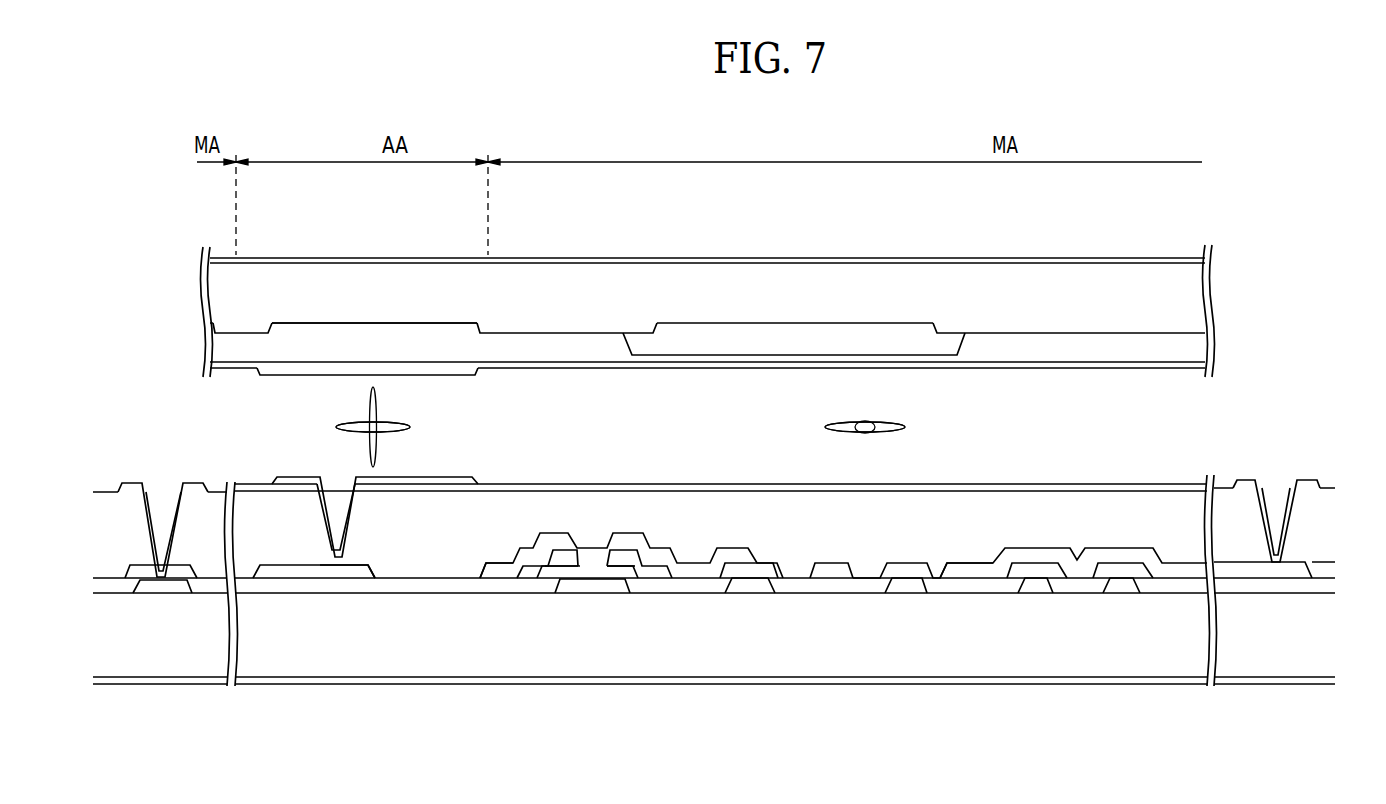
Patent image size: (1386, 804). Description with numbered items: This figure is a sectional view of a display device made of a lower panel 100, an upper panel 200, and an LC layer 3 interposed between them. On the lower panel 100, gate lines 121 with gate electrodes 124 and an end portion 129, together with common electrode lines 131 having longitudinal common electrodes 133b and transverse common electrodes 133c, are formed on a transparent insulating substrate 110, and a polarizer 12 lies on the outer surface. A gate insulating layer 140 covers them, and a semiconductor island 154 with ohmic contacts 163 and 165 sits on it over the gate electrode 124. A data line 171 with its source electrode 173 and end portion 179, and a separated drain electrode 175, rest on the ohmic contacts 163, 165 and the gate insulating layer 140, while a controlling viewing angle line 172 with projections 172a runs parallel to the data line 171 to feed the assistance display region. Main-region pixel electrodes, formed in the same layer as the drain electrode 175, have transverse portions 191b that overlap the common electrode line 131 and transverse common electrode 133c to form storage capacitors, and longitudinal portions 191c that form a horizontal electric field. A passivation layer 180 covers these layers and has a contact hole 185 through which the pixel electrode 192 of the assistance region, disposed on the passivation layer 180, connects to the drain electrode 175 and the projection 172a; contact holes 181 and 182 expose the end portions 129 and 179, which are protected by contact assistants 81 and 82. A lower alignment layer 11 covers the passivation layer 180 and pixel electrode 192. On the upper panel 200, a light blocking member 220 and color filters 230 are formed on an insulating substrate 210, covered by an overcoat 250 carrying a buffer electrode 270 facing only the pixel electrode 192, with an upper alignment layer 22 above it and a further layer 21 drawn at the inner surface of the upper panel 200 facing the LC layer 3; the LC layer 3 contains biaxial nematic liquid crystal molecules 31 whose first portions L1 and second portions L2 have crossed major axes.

The upper panel 200 is at (1342, 257).
The upper alignment layer 22 is at (458, 257).
The insulating substrate 210 is at (578, 282).
The overcoat 250 is at (330, 335).
The light blocking member 220 is at (248, 327).
The color filters 230 is at (683, 333).
The upper alignment layer 21 is at (855, 362).
The buffer electrode 270 is at (372, 362).
The LC layer 3 is at (1342, 372).
The biaxial nematic liquid crystal molecules 31 is at (425, 430).
The first portions L1 is at (377, 405).
The second portions L2 is at (400, 432).
The lower panel 100 is at (1342, 678).
The insulating substrate 110 is at (427, 653).
The polarizer 12 is at (264, 680).
The gate insulating layer 140 is at (458, 588).
The lower alignment layer 11 is at (247, 480).
The contact assistant 81 is at (130, 483).
The contact hole 181 is at (150, 510).
The end portion 129 is at (162, 590).
The pixel electrode 192 is at (298, 487).
The contact hole 185 is at (353, 520).
The controlling viewing angle line 172 is at (278, 588).
The projection 172a is at (360, 582).
The passivation layer 180 is at (867, 550).
The data line 171 is at (487, 570).
The gate electrode 124 is at (600, 590).
The semiconductor island 154 is at (572, 566).
The ohmic contact 163 is at (545, 570).
The ohmic contact 165 is at (657, 566).
The source electrode 173 is at (517, 580).
The drain electrode 175 is at (674, 570).
The transverse portion 191b is at (706, 563).
The transverse common electrode 133c is at (750, 587).
The longitudinal portion 191c is at (828, 570).
The longitudinal common electrode 133b is at (905, 585).
The common electrode line 131 is at (1037, 585).
The gate line 121 is at (1125, 585).
The contact assistant 82 is at (1247, 480).
The contact hole 182 is at (1262, 512).
The end portion 179 is at (1272, 570).